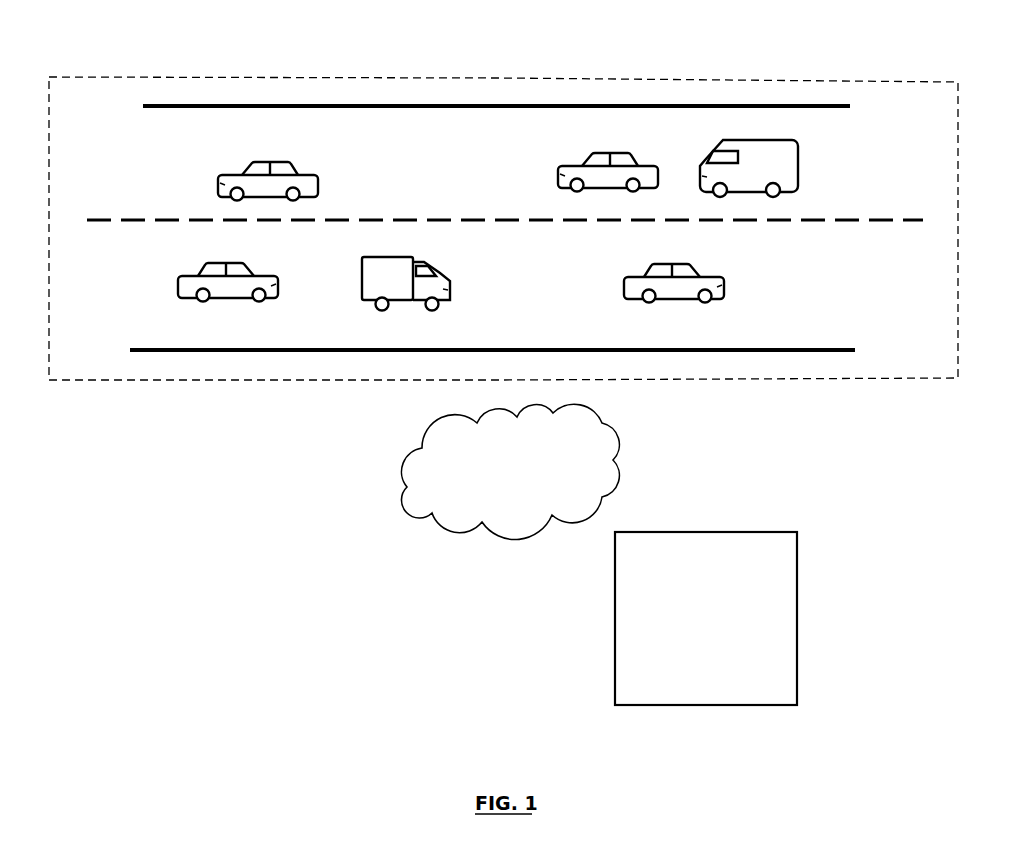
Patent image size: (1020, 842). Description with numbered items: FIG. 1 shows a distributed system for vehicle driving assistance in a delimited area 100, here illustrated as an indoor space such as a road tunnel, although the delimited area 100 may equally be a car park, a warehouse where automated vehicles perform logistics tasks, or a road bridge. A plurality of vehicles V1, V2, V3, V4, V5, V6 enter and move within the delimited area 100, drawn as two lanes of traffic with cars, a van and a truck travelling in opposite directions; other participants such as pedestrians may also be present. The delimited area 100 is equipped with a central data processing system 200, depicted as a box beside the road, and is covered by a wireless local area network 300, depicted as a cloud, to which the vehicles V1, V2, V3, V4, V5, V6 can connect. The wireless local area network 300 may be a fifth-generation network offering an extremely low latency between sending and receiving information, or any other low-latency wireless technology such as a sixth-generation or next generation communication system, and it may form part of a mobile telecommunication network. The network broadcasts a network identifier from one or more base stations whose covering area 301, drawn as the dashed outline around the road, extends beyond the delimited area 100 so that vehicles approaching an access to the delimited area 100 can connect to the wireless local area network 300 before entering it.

The delimited area 100 is at (455, 160).
The central data processing system 200 is at (672, 687).
The wireless local area network 300 is at (440, 523).
The covering area 301 is at (145, 380).
The vehicle V1 is at (264, 160).
The vehicle V2 is at (598, 152).
The vehicle V3 is at (768, 140).
The vehicle V4 is at (222, 290).
The vehicle V5 is at (361, 287).
The vehicle V6 is at (676, 292).